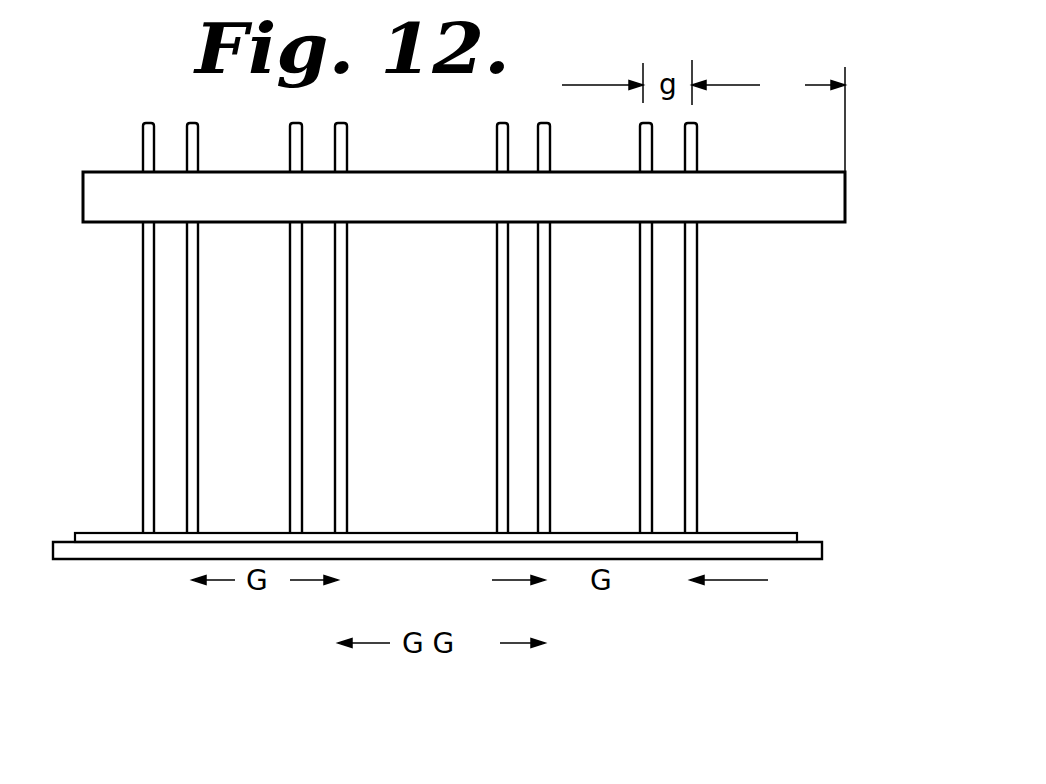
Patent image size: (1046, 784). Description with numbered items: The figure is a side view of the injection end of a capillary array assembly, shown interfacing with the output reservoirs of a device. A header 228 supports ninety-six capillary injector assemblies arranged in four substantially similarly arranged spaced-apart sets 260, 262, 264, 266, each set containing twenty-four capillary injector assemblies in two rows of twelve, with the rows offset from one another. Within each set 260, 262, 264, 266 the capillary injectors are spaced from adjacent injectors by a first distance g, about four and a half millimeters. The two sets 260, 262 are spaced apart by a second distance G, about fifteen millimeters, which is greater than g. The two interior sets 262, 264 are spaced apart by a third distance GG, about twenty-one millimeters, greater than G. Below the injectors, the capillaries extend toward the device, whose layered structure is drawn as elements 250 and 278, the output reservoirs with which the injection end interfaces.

The header 228 is at (798, 211).
The upper plate 250 is at (783, 487).
The lower plate 278 is at (822, 548).
The first spaced-apart set of capillary injector assemblies 260 is at (192, 559).
The second spaced-apart set of capillary injector assemblies 262 is at (338, 559).
The third spaced-apart set of capillary injector assemblies 264 is at (545, 559).
The fourth spaced-apart set of capillary injector assemblies 266 is at (690, 559).